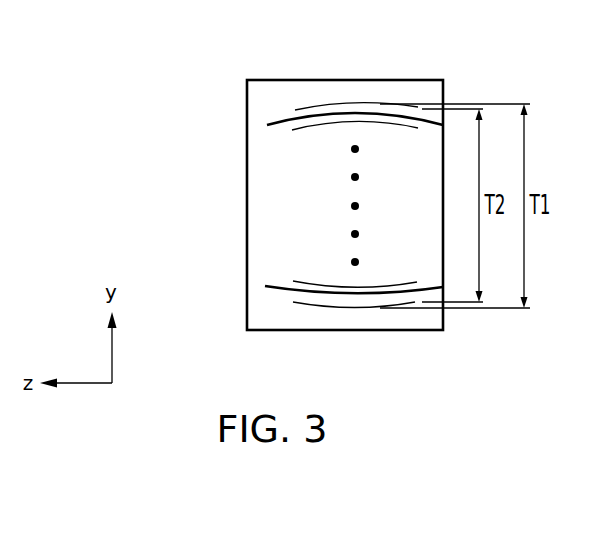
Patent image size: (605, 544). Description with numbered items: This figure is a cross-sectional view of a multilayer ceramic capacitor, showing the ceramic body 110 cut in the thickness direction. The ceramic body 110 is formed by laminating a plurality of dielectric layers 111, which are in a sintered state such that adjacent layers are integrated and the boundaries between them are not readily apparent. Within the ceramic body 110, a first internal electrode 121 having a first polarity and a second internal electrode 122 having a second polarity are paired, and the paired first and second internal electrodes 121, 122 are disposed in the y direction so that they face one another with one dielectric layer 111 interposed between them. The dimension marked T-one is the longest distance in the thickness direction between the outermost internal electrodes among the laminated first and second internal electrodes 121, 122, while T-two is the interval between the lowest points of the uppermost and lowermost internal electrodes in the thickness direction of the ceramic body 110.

The ceramic body 110 is at (358, 80).
The dielectric layer 111 is at (324, 122).
The first internal electrode 121 is at (317, 108).
The second internal electrode 122 is at (287, 117).